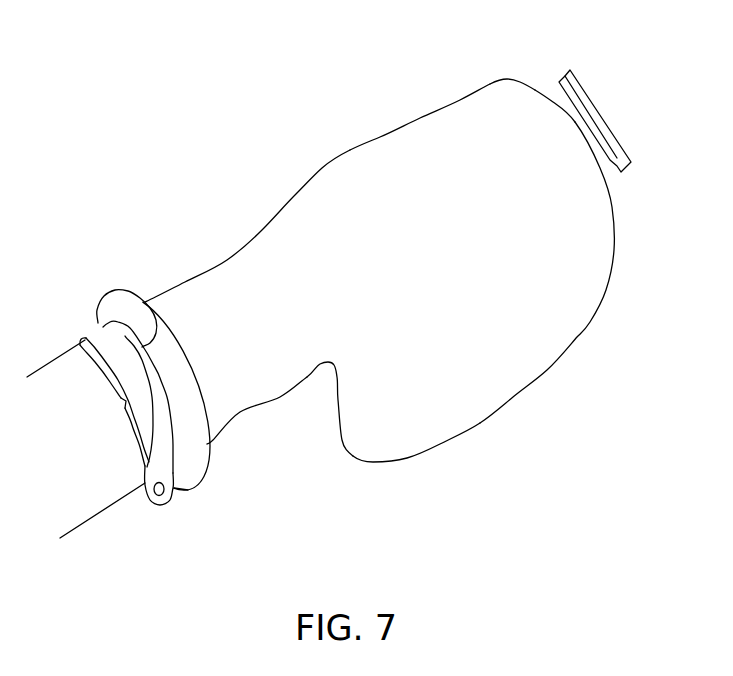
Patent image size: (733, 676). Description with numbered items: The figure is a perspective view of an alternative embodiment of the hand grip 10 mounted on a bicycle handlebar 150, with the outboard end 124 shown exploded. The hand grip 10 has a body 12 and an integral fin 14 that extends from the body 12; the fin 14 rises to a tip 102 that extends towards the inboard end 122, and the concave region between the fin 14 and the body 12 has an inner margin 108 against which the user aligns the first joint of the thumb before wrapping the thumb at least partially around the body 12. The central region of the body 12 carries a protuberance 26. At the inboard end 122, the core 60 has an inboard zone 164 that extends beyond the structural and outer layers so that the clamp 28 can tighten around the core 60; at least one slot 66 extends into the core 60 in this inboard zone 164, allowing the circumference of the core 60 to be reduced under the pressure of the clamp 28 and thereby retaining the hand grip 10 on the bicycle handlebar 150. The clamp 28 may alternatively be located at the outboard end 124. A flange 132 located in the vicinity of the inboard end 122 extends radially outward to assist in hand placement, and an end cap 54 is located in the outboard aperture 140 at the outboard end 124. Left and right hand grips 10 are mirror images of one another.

The hand grip 10 is at (326, 124).
The body 12 is at (401, 198).
The fin 14 is at (547, 336).
The protuberance 26 is at (333, 190).
The clamp 28 is at (107, 341).
The end cap 54 is at (611, 128).
The core 60 is at (142, 346).
The slot 66 is at (123, 408).
The tip 102 is at (363, 447).
The inner margin 108 is at (328, 372).
The inboard end 122 is at (178, 500).
The outboard end 124 is at (485, 68).
The flange 132 is at (193, 460).
The outboard aperture 140 is at (553, 101).
The bicycle handlebar 150 is at (82, 499).
The inboard zone 164 is at (145, 467).